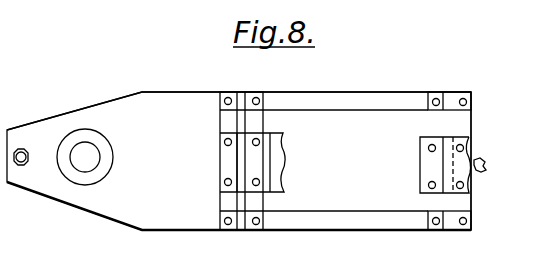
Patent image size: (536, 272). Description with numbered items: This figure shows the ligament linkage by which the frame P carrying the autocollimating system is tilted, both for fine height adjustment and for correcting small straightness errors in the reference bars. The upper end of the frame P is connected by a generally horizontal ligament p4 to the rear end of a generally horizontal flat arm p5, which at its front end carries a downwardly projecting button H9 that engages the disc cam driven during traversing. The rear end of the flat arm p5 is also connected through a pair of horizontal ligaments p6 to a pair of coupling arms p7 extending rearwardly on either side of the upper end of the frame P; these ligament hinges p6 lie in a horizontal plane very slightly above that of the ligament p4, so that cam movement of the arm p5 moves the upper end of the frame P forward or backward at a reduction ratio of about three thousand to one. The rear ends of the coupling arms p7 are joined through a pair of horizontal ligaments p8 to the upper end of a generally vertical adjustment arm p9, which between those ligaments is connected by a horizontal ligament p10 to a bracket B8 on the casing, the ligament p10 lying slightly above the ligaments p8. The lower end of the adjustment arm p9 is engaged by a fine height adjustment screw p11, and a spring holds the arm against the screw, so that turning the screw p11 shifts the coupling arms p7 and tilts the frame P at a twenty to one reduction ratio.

The button H9 is at (23, 148).
The flat arm p5 is at (170, 99).
The horizontal ligaments p6 is at (241, 246).
The horizontal ligament p4 is at (246, 136).
The frame P is at (263, 158).
The coupling arms p7 is at (322, 96).
The horizontal ligaments p8 is at (451, 100).
The adjustment arm p9 is at (466, 127).
The bracket B8 is at (425, 166).
The horizontal ligament p10 is at (440, 186).
The fine height adjustment screw p11 is at (480, 160).